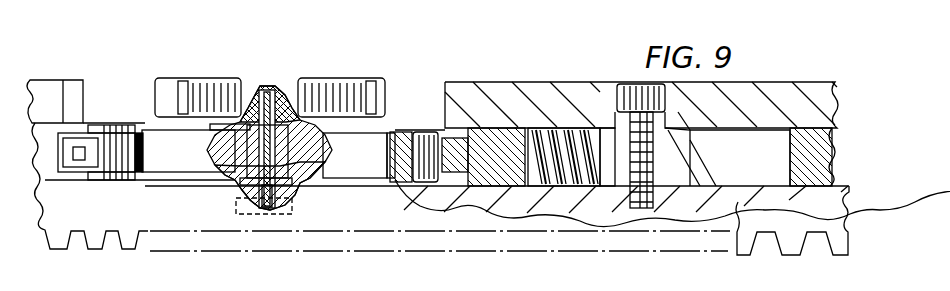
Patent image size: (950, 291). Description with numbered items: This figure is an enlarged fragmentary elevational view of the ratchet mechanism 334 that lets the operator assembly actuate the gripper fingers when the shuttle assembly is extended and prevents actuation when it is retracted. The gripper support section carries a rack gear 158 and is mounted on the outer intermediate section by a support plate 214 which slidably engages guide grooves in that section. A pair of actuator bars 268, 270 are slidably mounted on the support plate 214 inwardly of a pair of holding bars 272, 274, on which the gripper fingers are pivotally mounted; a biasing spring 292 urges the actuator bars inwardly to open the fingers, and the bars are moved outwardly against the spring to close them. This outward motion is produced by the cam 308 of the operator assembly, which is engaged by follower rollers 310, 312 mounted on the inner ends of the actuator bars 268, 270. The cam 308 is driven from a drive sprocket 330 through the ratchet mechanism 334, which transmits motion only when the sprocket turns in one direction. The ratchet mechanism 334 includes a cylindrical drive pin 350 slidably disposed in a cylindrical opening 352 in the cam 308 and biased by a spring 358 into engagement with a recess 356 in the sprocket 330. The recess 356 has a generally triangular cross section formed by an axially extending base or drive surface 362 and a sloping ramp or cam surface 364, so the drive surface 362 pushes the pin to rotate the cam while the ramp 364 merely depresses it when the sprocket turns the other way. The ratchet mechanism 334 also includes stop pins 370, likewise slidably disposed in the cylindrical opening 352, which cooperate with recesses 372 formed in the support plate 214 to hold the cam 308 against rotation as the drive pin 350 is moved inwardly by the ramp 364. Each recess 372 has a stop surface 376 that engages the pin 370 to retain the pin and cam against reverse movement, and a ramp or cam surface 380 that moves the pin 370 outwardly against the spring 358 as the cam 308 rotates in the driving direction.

The rack gear 158 is at (708, 244).
The support plate 214 is at (519, 210).
The actuator bar 268 is at (50, 144).
The actuator bar 270 is at (472, 130).
The holding bar 272 is at (42, 93).
The holding bar 274 is at (465, 96).
The biasing spring 292 is at (571, 128).
The cam 308 is at (365, 165).
The follower roller 310 is at (86, 162).
The follower roller 312 is at (402, 133).
The drive sprocket 330 is at (380, 88).
The ratchet mechanism 334 is at (230, 208).
The drive pin 350 is at (268, 108).
The cylindrical opening 352 is at (207, 150).
The recess 356 is at (270, 93).
The spring 358 is at (290, 144).
The drive surface 362 is at (257, 111).
The ramp surface 364 is at (280, 100).
The stop pin 370 is at (270, 208).
The recess 372 is at (267, 203).
The stop surface 376 is at (252, 200).
The ramp surface 380 is at (280, 183).